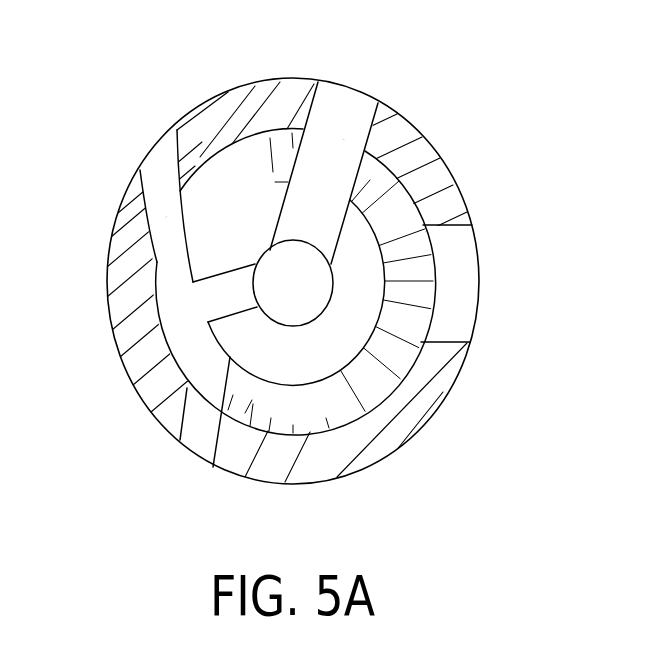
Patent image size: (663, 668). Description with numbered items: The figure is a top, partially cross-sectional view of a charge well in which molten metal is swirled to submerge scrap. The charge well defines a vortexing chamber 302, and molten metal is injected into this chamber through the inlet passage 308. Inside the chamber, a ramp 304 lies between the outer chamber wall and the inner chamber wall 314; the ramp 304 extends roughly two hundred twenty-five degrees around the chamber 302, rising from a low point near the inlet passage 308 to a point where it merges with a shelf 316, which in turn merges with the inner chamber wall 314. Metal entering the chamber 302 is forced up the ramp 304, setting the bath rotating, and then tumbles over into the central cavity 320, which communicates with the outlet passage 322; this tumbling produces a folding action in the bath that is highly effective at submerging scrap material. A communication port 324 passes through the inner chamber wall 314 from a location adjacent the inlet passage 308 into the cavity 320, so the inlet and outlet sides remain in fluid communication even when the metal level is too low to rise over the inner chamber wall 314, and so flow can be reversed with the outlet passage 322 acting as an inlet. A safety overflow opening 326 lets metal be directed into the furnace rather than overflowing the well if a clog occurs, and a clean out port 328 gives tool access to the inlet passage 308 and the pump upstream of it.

The vortexing chamber 302 is at (470, 160).
The ramp 304 is at (380, 368).
The inlet passage 308 is at (163, 197).
The inner chamber wall 314 is at (281, 385).
The shelf 316 is at (223, 203).
The cavity 320 is at (308, 277).
The outlet passage 322 is at (325, 160).
The communication port 324 is at (222, 295).
The safety overflow opening 326 is at (460, 277).
The clean out port 328 is at (197, 425).